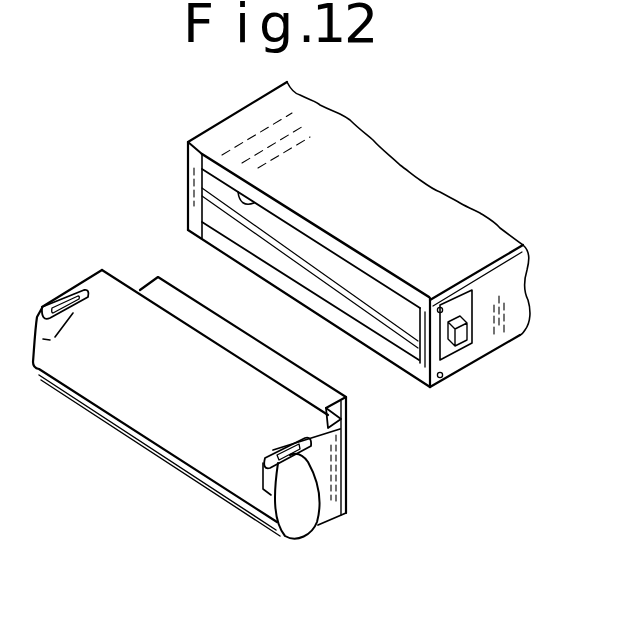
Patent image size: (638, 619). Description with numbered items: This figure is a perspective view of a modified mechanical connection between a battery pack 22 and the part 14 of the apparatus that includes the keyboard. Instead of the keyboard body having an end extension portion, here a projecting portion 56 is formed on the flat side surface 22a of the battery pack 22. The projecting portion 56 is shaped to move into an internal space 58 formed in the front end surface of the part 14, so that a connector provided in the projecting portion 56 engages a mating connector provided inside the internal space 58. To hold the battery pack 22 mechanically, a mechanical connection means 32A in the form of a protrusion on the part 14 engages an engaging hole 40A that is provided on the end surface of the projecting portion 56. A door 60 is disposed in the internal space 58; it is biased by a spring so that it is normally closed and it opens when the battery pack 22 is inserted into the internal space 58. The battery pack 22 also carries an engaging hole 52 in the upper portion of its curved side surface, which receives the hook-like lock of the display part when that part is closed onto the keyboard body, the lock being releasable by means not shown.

The part including the keyboard 14 is at (460, 234).
The battery pack 22 is at (158, 407).
The flat side surface 22a is at (346, 463).
The mechanical connection means 32A is at (463, 340).
The engaging hole 40A is at (343, 420).
The engaging hole 52 is at (70, 300).
The projecting portion 56 is at (200, 303).
The internal space 58 is at (271, 200).
The door 60 is at (303, 283).